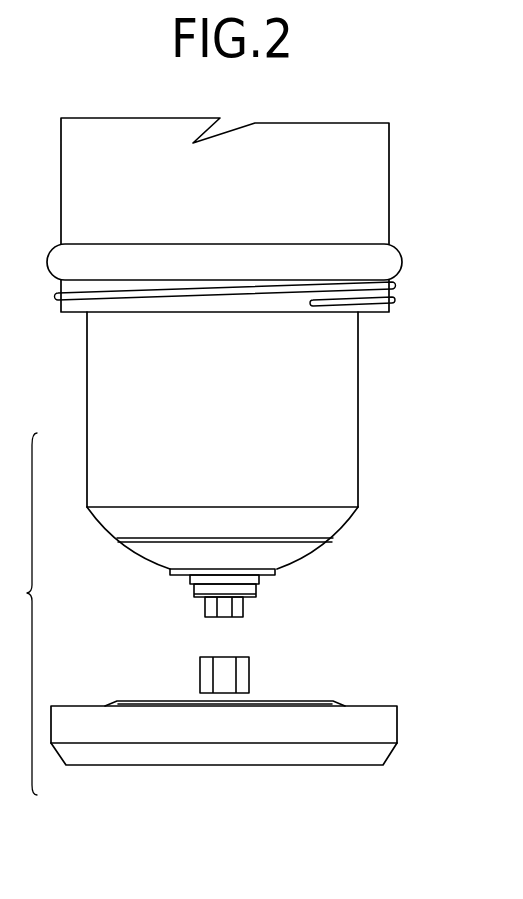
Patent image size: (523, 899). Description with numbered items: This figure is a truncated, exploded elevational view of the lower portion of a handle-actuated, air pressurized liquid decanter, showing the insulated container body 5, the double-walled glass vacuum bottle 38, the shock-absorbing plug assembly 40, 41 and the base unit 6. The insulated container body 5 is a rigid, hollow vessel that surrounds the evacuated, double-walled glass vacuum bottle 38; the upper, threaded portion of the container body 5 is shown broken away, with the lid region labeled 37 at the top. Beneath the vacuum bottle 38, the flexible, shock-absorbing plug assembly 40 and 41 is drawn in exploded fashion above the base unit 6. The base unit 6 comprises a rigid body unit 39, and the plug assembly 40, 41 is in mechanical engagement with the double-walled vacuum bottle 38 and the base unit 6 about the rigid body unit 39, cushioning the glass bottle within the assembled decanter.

The insulated container body 5 is at (389, 217).
The base unit 6 is at (397, 733).
The lid 37 is at (61, 176).
The double-walled glass vacuum bottle 38 is at (358, 417).
The rigid body unit 39 is at (312, 703).
The shock absorbing plug assembly 40 is at (194, 596).
The shock absorbing plug assembly 41 is at (200, 663).